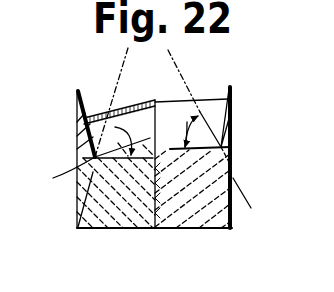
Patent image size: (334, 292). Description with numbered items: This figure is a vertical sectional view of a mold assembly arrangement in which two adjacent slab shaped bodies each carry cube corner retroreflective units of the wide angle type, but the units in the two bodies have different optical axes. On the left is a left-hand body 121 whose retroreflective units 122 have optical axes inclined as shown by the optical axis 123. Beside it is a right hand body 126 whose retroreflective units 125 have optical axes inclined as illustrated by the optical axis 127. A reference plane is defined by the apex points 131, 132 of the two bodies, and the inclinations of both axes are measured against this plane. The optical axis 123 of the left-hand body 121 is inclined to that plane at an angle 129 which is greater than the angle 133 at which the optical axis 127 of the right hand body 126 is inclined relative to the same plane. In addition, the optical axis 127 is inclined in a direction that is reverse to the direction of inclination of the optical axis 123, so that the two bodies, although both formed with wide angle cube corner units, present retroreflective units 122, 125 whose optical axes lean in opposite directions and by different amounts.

The left-hand body 121 is at (130, 234).
The retroreflective units 122 is at (100, 89).
The optical axis 123 is at (74, 213).
The retroreflective units 125 is at (216, 89).
The right hand body 126 is at (182, 234).
The optical axis 127 is at (241, 191).
The angle 129 is at (116, 126).
The apex point 131 is at (89, 163).
The apex point 132 is at (233, 145).
The angle 133 is at (187, 136).